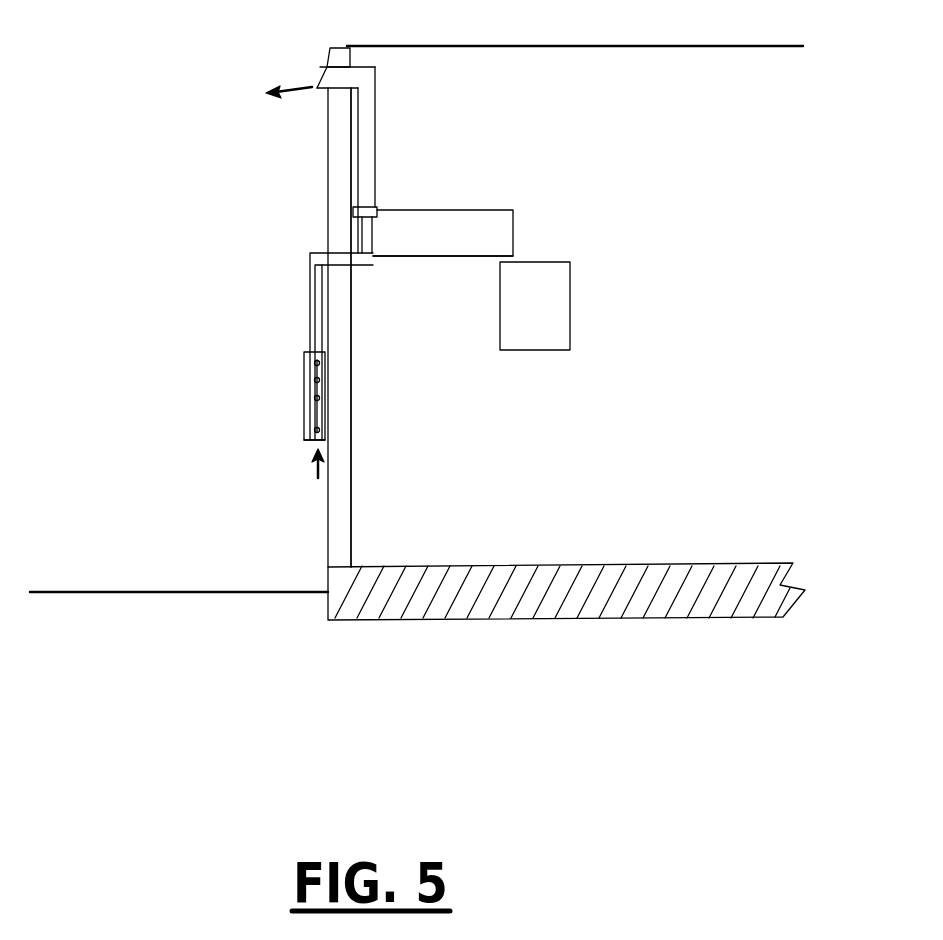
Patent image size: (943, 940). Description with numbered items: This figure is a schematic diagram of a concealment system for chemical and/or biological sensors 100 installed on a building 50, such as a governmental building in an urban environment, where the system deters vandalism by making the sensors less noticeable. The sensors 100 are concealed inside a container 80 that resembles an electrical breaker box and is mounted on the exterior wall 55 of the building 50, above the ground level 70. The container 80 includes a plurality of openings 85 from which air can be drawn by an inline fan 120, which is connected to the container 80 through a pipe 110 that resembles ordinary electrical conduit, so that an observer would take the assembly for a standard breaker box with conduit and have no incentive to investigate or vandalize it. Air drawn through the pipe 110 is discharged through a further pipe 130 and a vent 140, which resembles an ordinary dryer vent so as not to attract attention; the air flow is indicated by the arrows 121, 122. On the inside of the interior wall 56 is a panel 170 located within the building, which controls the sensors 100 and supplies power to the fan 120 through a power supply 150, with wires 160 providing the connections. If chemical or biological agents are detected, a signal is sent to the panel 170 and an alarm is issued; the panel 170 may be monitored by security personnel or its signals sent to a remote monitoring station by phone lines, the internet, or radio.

The building 50 is at (695, 175).
The exterior wall 55 is at (325, 532).
The interior wall 56 is at (353, 487).
The ground level 70 is at (147, 592).
The container 80 is at (303, 402).
The openings 85 is at (312, 443).
The sensors 100 is at (312, 363).
The pipe 110 is at (303, 305).
The inline fan 120 is at (379, 208).
The arrow 121 is at (313, 473).
The arrow 122 is at (298, 90).
The pipe 130 is at (381, 148).
The vent 140 is at (314, 77).
The power supply 150 is at (497, 210).
The wires 160 is at (440, 256).
The panel 170 is at (573, 297).